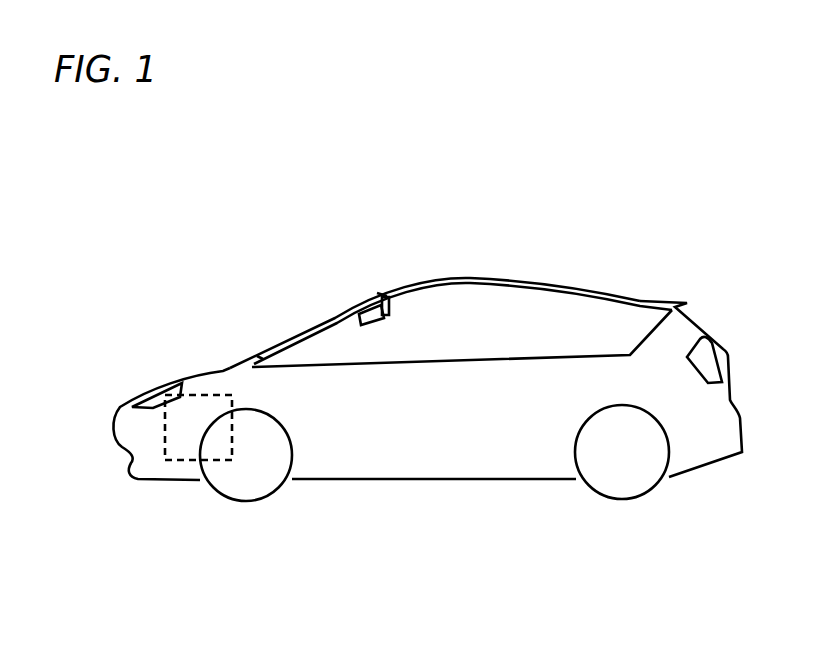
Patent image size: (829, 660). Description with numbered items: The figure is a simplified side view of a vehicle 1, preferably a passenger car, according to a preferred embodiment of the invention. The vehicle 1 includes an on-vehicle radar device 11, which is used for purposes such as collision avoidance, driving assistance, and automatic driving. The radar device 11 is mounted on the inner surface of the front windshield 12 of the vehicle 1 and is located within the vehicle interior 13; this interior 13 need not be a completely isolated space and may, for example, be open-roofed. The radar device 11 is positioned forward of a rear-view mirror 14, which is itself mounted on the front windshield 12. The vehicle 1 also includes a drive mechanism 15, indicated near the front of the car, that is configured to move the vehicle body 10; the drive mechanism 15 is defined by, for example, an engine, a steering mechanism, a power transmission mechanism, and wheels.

The vehicle 1 is at (230, 270).
The vehicle body 10 is at (455, 500).
The on-vehicle radar device 11 is at (373, 310).
The front windshield 12 is at (327, 316).
The vehicle interior 13 is at (480, 341).
The rear-view mirror 14 is at (387, 298).
The drive mechanism 15 is at (188, 448).